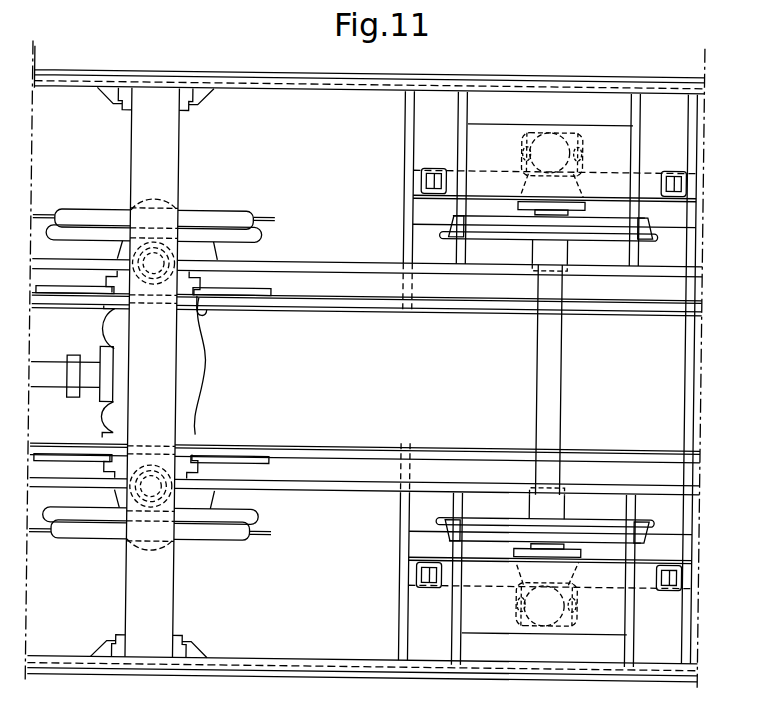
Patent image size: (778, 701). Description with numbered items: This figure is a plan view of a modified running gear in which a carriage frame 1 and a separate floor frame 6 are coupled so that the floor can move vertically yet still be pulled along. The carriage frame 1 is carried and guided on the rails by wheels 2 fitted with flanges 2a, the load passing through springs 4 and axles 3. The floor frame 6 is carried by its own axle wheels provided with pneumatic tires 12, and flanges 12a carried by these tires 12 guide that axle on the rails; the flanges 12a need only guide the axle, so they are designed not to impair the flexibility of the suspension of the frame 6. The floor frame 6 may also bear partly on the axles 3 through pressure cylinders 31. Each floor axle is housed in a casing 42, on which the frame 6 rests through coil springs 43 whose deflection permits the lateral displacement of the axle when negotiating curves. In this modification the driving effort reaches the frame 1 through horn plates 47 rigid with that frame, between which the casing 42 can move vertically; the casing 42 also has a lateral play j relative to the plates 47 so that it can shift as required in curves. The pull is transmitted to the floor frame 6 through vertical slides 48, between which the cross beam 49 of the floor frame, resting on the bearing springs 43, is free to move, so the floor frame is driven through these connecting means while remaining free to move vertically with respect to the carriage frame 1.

The carriage frame 1 is at (321, 300).
The wheels 2 is at (483, 523).
The flanges 2a is at (607, 521).
The axles 3 is at (523, 610).
The springs 4 is at (442, 169).
The floor frame 6 is at (378, 491).
The pneumatic tires 12 is at (211, 230).
The flanges 12a is at (78, 234).
The pressure cylinders 31 is at (522, 156).
The casing 42 is at (197, 398).
The coil springs 43 is at (182, 257).
The horn plates 47 is at (239, 464).
The vertical slides 48 is at (120, 103).
The cross beam 49 is at (160, 97).
The lateral play j is at (204, 316).